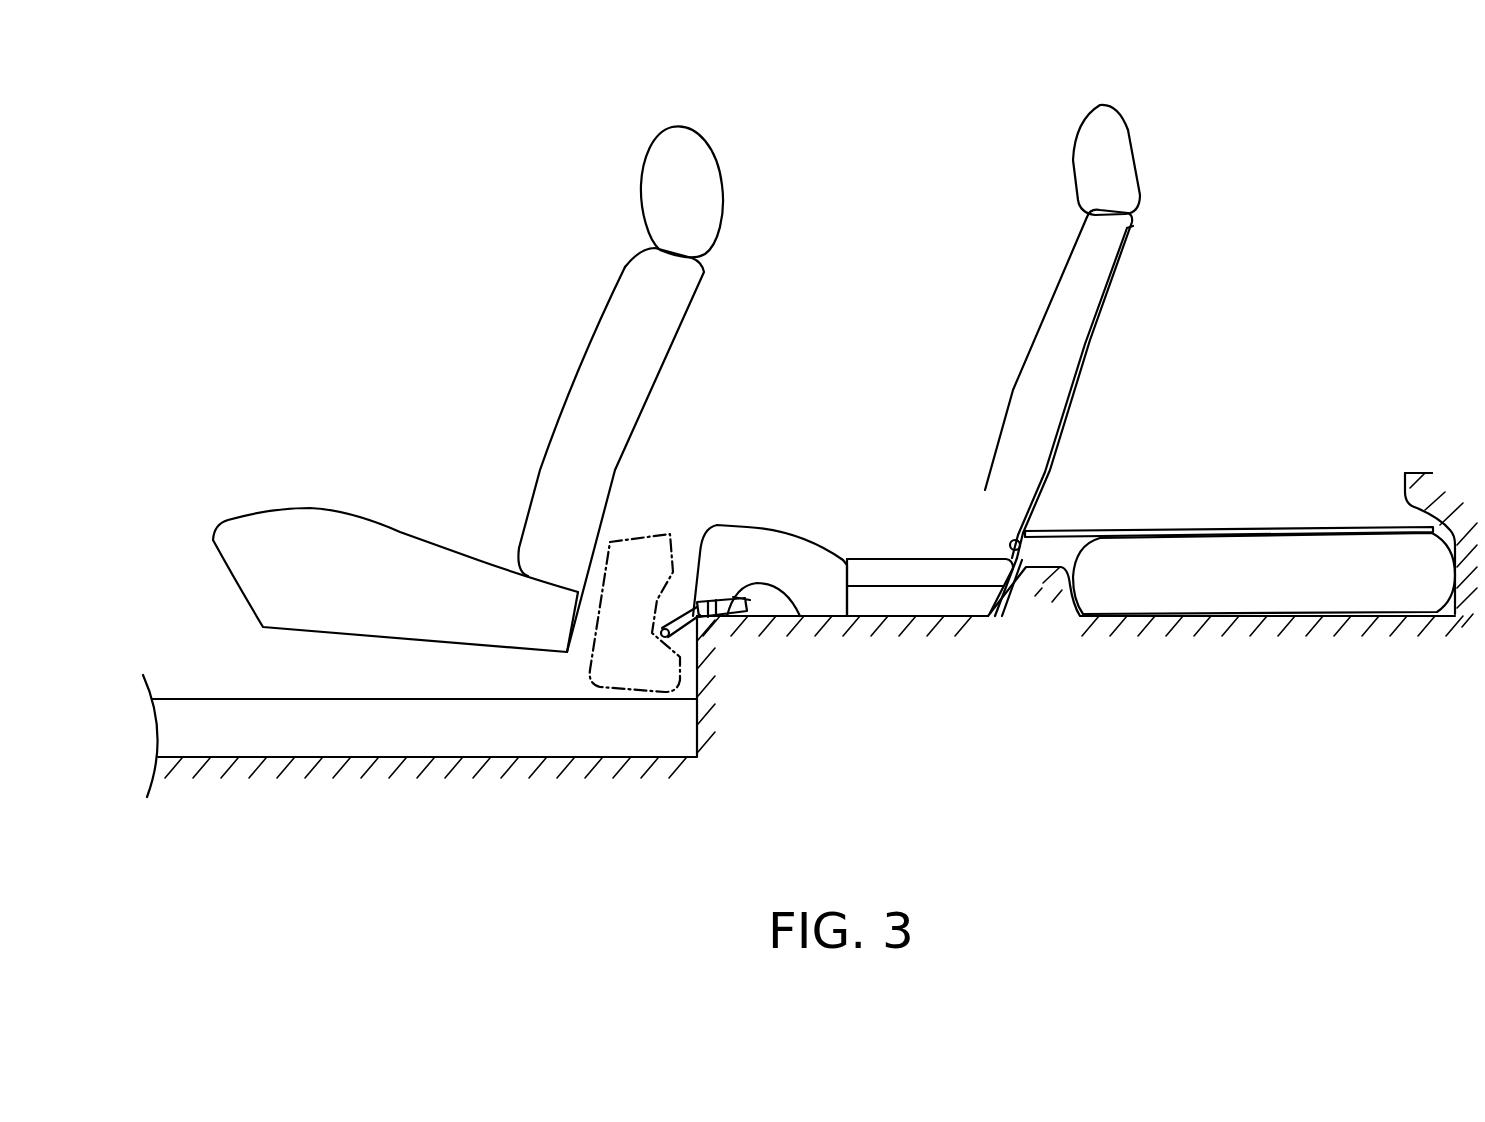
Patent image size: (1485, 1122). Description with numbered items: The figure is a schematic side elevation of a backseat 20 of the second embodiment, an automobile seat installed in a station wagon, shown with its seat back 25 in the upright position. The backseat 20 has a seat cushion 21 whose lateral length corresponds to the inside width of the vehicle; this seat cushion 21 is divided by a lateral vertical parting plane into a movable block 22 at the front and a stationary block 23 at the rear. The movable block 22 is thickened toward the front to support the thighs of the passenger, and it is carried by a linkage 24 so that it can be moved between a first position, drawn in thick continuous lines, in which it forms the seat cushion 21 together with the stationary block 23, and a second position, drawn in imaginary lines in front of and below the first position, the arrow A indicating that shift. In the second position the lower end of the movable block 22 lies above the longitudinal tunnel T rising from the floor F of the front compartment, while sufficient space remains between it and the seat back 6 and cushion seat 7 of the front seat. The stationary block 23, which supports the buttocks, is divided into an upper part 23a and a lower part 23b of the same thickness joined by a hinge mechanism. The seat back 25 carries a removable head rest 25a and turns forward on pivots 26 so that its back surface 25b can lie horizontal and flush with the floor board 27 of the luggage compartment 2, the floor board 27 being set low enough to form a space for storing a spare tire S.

The luggage compartment 2 is at (1317, 359).
The seat back of the front seat 6 is at (586, 395).
The cushion seat of the front seat 7 is at (333, 522).
The backseat 20 is at (860, 312).
The seat cushion 21 is at (897, 481).
The movable block 22 is at (752, 528).
The stationary block 23 is at (897, 550).
The upper part 23a is at (1008, 560).
The lower part 23b is at (918, 603).
The linkage 24 is at (710, 618).
The seat back 25 is at (1030, 365).
The head rest 25a is at (1112, 148).
The back surface 25b is at (1107, 300).
The pivots 26 is at (1020, 536).
The floor board 27 is at (1290, 530).
The seat movement direction A is at (650, 516).
The floor F is at (522, 755).
The spare tire S is at (1280, 590).
The longitudinal tunnel T is at (248, 700).